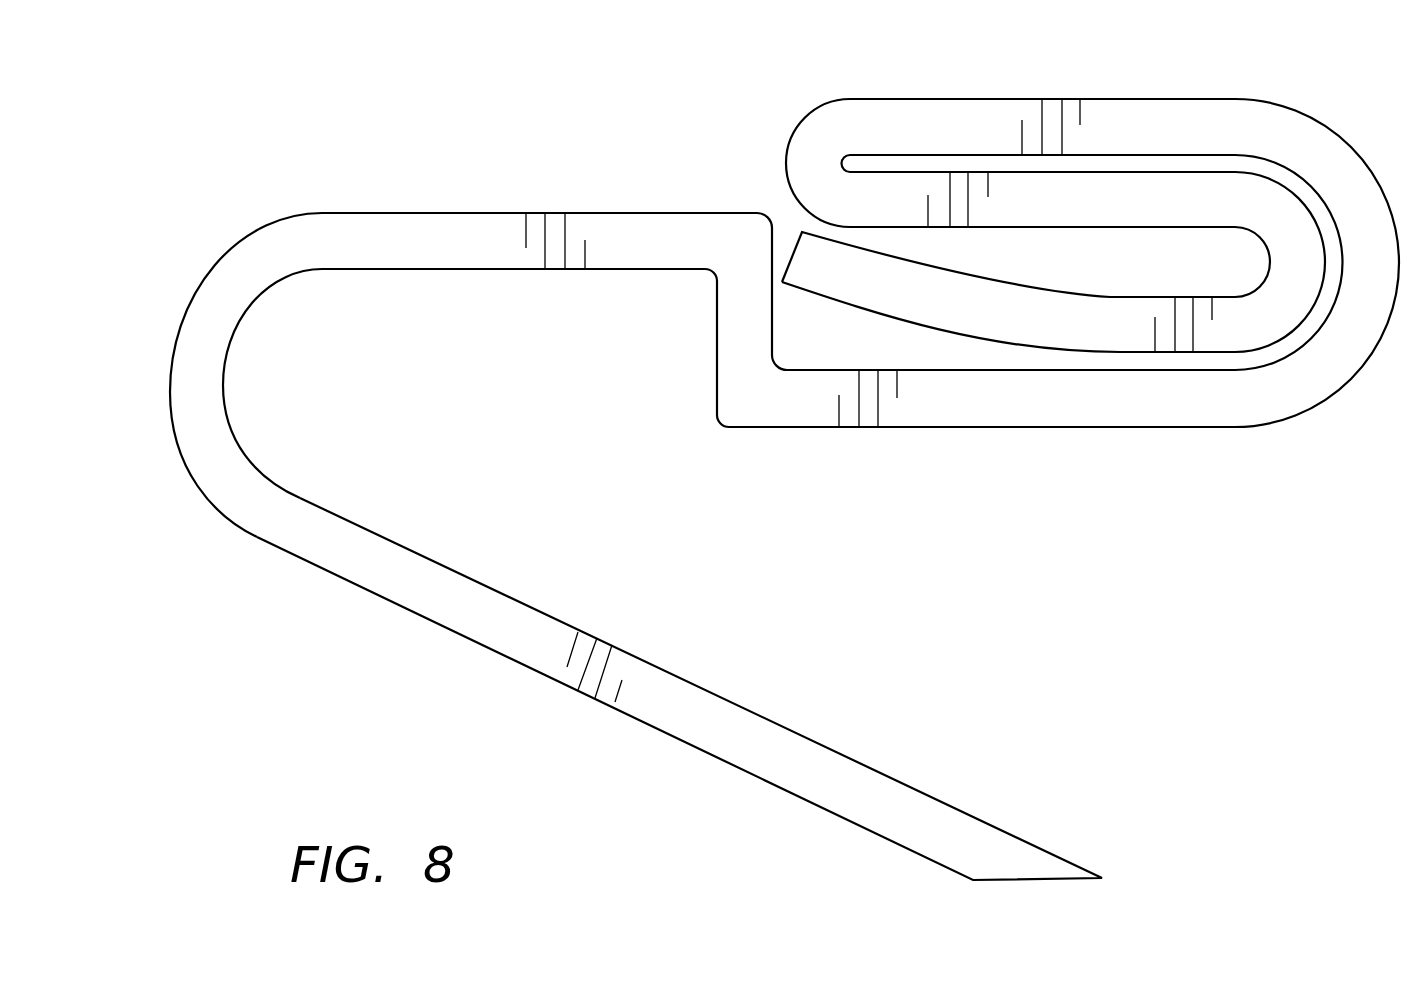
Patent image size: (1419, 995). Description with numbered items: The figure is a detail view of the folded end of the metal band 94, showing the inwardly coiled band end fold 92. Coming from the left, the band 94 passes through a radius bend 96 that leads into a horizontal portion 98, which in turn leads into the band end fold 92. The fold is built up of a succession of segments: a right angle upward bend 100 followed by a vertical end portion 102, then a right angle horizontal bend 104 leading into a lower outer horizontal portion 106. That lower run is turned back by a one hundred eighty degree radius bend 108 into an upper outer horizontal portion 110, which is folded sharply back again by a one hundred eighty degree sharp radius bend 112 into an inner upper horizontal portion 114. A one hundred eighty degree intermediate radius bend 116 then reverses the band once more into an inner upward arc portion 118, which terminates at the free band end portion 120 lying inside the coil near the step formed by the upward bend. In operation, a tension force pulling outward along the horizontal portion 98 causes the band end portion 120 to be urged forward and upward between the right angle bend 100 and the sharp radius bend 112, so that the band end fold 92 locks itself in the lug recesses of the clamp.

The band end fold 92 is at (1328, 108).
The band 94 is at (793, 757).
The radius bend 96 is at (207, 353).
The horizontal portion 98 is at (367, 262).
The right angle upward bend 100 is at (715, 272).
The vertical end portion 102 is at (738, 358).
The right angle horizontal bend 104 is at (722, 422).
The lower outer horizontal portion 106 is at (1002, 415).
The 180 degree radius bend 108 is at (1293, 392).
The upper outer horizontal portion 110 is at (1003, 105).
The 180 degree sharp radius bend 112 is at (807, 162).
The inner upper horizontal portion 114 is at (1138, 215).
The 180 degree intermediate radius bend 116 is at (1287, 265).
The inner upward arc portion 118 is at (957, 310).
The band end portion 120 is at (840, 257).